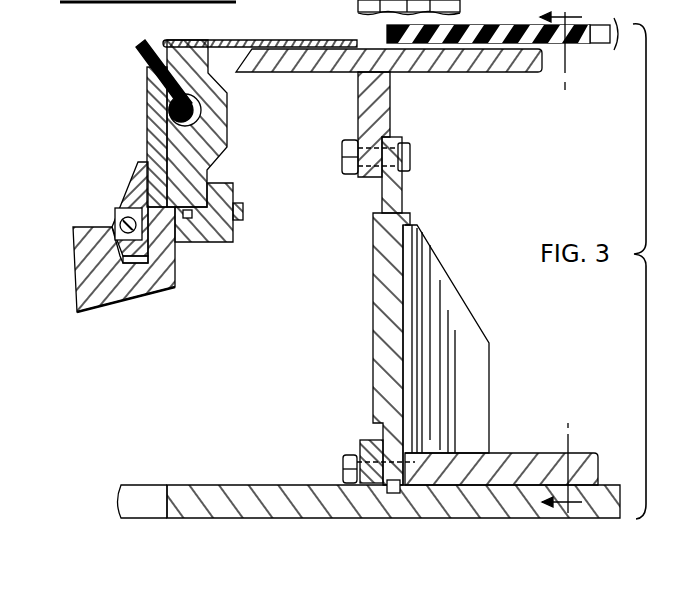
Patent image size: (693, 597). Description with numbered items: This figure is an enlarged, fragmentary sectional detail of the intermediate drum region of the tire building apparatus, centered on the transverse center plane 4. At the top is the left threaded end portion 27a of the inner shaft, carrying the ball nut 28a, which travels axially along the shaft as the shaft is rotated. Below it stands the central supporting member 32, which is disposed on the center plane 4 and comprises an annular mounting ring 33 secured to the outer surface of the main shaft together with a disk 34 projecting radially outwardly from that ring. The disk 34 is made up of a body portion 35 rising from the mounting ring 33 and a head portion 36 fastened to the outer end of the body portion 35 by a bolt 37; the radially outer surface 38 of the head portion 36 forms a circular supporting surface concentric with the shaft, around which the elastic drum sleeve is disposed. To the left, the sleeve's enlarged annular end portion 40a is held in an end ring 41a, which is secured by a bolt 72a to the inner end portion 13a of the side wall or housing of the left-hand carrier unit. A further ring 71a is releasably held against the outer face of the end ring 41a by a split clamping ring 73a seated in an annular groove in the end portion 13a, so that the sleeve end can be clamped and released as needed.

The threaded end portion 27a is at (237, 0).
The ball nut 28a is at (461, 5).
The radially outer surface 38 is at (377, 49).
The head portion 36 is at (370, 94).
The bolt 37 is at (342, 164).
The disk 34 is at (373, 245).
The body portion 35 is at (392, 343).
The central supporting member 32 is at (443, 267).
The mounting ring 33 is at (500, 453).
The end ring 41a is at (208, 150).
The enlarged annular end portion 40a is at (205, 108).
The ring 71a is at (183, 241).
The bolt 72a is at (245, 220).
The inner end portion 13a is at (122, 288).
The split clamping ring 73a is at (132, 197).
The center plane 4 is at (561, 262).